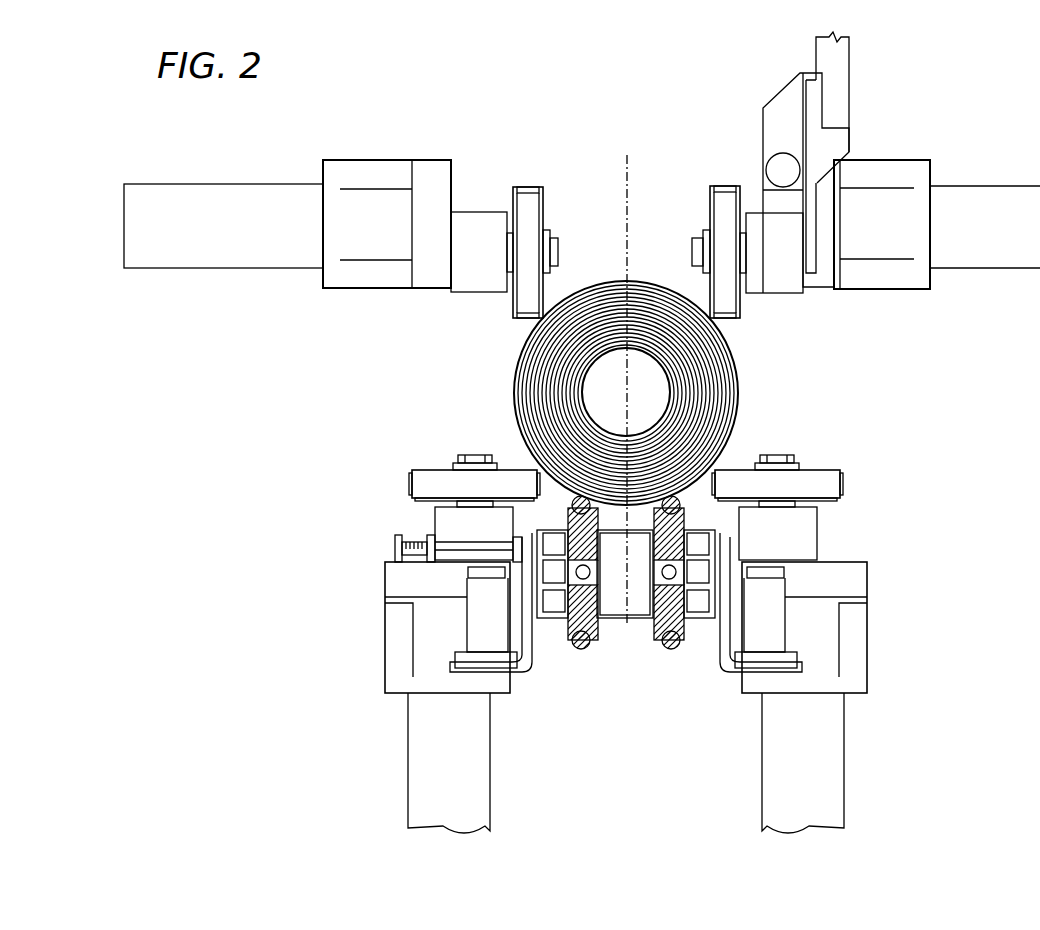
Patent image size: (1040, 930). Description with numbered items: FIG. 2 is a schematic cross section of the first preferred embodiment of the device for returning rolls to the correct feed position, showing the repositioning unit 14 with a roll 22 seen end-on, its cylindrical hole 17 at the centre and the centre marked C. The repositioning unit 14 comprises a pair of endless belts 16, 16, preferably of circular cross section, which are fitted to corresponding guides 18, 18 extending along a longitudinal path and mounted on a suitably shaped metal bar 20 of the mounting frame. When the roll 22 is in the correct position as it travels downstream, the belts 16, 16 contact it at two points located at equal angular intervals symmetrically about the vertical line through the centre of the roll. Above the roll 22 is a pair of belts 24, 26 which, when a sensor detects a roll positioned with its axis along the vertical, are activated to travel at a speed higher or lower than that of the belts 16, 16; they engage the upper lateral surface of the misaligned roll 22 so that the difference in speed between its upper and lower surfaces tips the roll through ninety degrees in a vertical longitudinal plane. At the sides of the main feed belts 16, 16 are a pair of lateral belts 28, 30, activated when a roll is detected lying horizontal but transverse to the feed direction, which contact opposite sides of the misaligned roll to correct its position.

The repositioning unit 14 is at (641, 126).
The endless belts 16 is at (537, 443).
The cylindrical hole 17 is at (608, 398).
The guides 18 is at (567, 630).
The metal bar 20 is at (624, 620).
The roll 22 is at (557, 362).
The belt 24 is at (525, 186).
The belt 26 is at (732, 323).
The lateral belt 28 is at (410, 475).
The lateral belt 30 is at (843, 473).
The coil center axis C is at (636, 368).